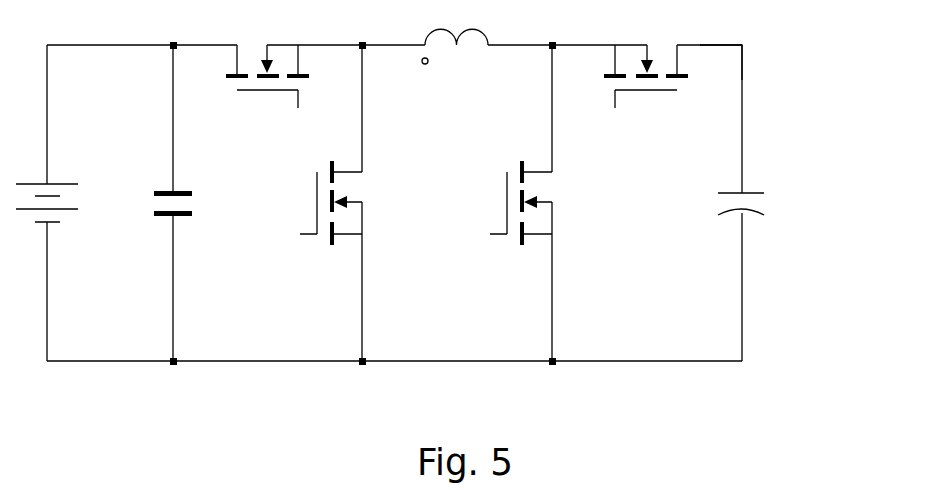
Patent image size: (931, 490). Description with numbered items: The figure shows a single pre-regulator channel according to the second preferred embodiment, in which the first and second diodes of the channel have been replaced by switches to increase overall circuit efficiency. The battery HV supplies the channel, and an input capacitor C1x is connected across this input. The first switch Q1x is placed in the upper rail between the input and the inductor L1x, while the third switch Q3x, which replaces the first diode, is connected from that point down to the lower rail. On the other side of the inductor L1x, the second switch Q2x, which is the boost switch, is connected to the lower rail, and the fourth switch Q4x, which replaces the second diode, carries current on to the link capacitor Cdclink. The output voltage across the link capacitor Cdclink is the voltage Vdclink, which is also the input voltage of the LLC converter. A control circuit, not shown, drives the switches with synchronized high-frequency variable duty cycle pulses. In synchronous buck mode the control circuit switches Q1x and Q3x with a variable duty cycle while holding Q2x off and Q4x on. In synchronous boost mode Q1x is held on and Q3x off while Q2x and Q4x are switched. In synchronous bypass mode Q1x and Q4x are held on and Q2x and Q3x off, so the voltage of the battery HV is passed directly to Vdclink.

The battery HV is at (68, 183).
The input capacitor C1x is at (199, 198).
The first switch Q1x is at (242, 76).
The second switch Q2x is at (521, 222).
The third switch Q3x is at (331, 222).
The fourth switch Q4x is at (672, 76).
The inductor L1x is at (455, 65).
The link capacitor Cdclink is at (789, 197).
The output voltage Vdclink is at (770, 53).